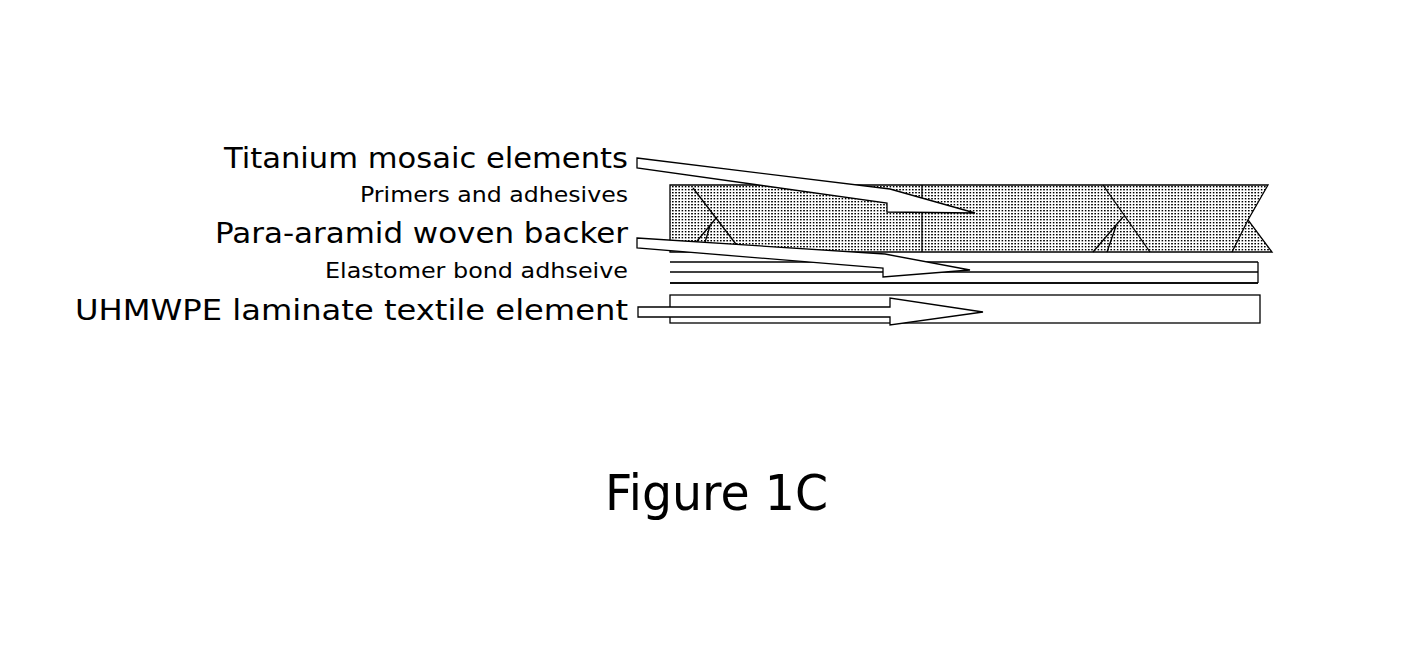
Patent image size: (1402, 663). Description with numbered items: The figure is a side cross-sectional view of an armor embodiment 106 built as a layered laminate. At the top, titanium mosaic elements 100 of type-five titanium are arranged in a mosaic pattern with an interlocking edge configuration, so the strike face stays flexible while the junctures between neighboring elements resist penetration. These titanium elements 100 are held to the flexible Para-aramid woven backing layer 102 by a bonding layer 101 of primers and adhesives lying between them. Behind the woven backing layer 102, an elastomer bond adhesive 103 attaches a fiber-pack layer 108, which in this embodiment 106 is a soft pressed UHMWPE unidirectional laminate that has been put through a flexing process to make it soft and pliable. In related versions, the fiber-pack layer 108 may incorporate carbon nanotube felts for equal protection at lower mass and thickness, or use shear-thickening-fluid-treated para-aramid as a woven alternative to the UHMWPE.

The type-5 titanium elements 100 is at (1021, 208).
The bonding layer 101 is at (1260, 255).
The Para-aramid woven backing layer 102 is at (1258, 266).
The elastomer bond adhesive 103 is at (1140, 283).
The embodiment 106 is at (1050, 103).
The fiber-pack layer 108 is at (1260, 315).